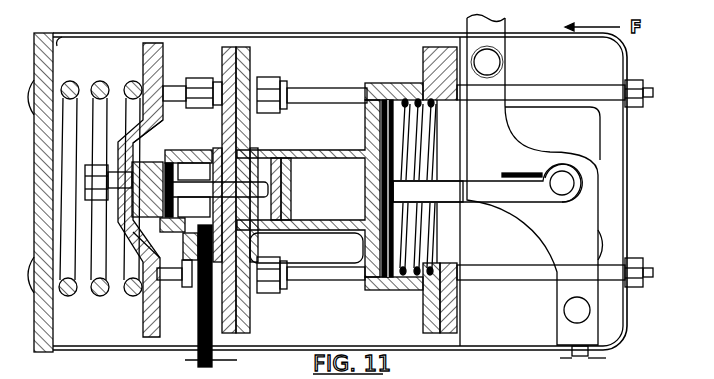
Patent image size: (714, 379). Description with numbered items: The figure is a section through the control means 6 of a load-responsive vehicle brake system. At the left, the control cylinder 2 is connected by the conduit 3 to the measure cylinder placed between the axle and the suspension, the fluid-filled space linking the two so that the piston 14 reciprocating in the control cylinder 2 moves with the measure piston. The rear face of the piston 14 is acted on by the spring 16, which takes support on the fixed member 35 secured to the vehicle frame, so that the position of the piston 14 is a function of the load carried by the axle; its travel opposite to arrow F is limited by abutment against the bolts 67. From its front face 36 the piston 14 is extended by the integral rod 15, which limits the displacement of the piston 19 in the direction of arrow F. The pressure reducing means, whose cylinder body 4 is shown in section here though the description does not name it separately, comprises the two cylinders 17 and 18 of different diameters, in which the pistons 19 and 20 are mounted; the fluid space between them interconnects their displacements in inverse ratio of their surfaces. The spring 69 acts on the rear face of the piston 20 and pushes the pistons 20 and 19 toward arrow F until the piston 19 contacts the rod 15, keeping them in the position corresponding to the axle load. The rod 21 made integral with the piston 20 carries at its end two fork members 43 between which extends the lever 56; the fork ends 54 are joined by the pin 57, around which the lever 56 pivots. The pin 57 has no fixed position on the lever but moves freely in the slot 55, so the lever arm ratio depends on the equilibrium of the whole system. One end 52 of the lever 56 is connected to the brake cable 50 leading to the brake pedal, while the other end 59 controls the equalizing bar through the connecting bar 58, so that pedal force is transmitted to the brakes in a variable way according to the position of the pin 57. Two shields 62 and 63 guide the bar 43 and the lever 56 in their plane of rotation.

The control cylinder 2 is at (200, 166).
The conduit 3 is at (217, 299).
The cylinder 4 is at (347, 148).
The control means 6 is at (338, 69).
The piston 14 is at (155, 157).
The rod 15 is at (142, 221).
The spring 16 is at (96, 80).
The cylinder 17 is at (308, 172).
The cylinder 18 is at (406, 98).
The piston 19 is at (291, 230).
The piston 20 is at (382, 188).
The rod 21 is at (428, 186).
The fixed member 35 is at (55, 349).
The front face 36 is at (167, 43).
The fork members 43 is at (482, 186).
The brake cable 50 is at (607, 358).
The end of lever 52 is at (568, 288).
The fork ends 54 is at (560, 204).
The slot 55 is at (530, 172).
The lever 56 is at (602, 242).
The pin 57 is at (573, 180).
The connecting bar 58 is at (490, 37).
The end of lever 59 is at (499, 82).
The shield 62 is at (500, 254).
The shield 63 is at (588, 135).
The bolts 67 is at (174, 294).
The spring 69 is at (406, 289).